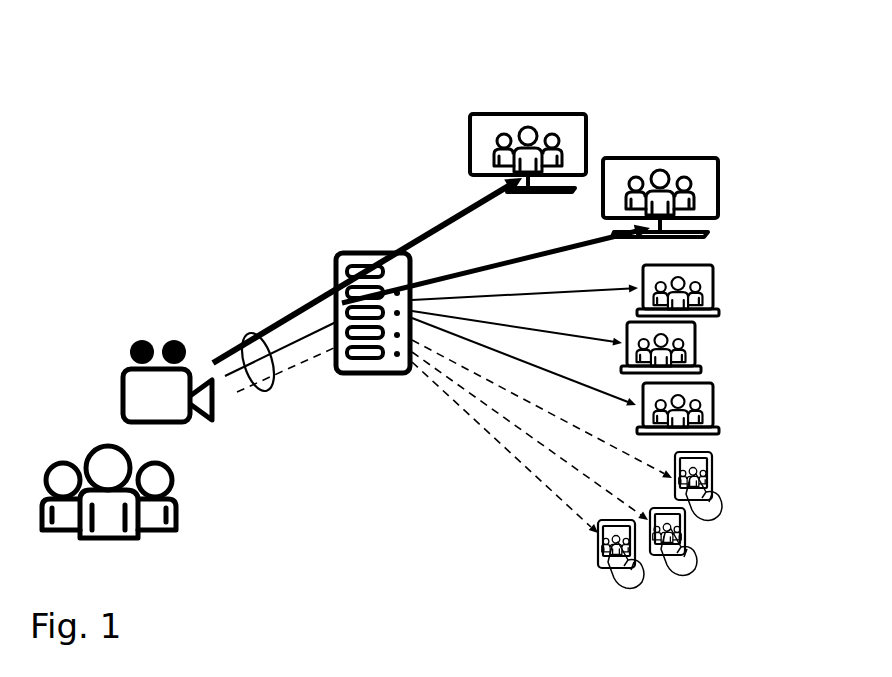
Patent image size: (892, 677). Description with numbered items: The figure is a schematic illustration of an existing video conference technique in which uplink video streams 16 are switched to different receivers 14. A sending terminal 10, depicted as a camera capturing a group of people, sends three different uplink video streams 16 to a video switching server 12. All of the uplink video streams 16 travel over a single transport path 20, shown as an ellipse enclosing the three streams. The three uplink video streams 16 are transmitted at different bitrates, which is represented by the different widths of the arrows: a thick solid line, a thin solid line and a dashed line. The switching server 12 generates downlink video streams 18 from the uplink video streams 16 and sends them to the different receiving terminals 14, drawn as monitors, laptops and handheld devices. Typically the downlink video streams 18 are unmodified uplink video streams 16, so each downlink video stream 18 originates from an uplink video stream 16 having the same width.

The terminal 10 is at (123, 381).
The video switching server 12 is at (335, 271).
The receiving terminals 14 is at (588, 135).
The uplink video streams 16 is at (298, 340).
The downlink video streams 18 is at (502, 252).
The transport path 20 is at (248, 336).